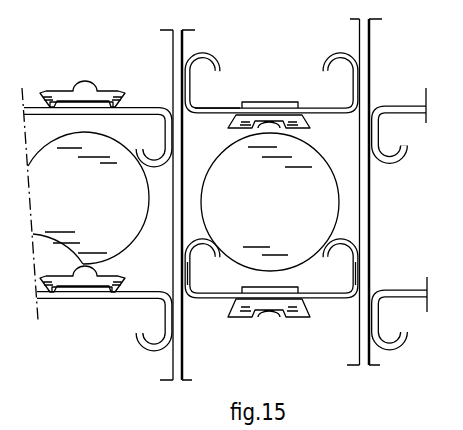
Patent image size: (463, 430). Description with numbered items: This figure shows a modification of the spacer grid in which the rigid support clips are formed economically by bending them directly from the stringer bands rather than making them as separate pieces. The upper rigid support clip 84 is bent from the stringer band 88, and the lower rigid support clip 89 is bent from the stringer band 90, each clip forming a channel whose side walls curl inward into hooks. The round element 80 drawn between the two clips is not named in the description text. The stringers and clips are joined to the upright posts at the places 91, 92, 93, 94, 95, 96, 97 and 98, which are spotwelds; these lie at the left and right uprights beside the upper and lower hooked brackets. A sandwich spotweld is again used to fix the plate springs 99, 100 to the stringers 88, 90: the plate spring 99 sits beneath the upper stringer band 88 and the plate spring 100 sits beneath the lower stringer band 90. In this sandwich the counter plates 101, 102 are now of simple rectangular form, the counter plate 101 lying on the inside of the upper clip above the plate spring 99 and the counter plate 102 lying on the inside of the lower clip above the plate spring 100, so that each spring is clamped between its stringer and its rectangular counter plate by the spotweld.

The ball 80 is at (147, 188).
The rigid support clip 84 is at (216, 63).
The stringer band 88 is at (213, 106).
The rigid support clip 89 is at (203, 237).
The stringer band 90 is at (200, 292).
The spotweld place 91 is at (181, 142).
The spotweld place 92 is at (175, 92).
The spotweld place 93 is at (372, 75).
The spotweld place 94 is at (375, 137).
The spotweld place 95 is at (373, 275).
The spotweld place 96 is at (190, 259).
The spotweld place 97 is at (176, 324).
The spotweld place 98 is at (380, 322).
The plate spring 99 is at (307, 129).
The plate spring 100 is at (297, 317).
The counter plate 101 is at (282, 102).
The counter plate 102 is at (292, 283).